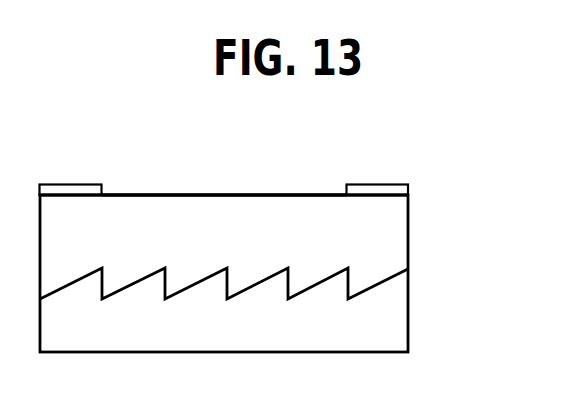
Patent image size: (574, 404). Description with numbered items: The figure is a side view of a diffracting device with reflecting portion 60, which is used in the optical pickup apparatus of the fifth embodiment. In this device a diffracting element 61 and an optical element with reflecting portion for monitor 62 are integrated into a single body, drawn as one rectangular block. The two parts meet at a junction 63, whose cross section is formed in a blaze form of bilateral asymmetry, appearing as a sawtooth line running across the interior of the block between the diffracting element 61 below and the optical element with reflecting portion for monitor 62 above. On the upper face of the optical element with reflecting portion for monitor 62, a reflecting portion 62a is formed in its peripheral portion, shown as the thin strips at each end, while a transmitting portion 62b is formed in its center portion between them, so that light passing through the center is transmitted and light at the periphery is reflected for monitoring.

The diffracting device with reflecting portion 60 is at (448, 153).
The diffracting element 61 is at (409, 322).
The optical element with reflecting portion for monitor 62 is at (409, 230).
The reflecting portion 62a is at (78, 184).
The transmitting portion 62b is at (227, 194).
The junction 63 is at (288, 258).